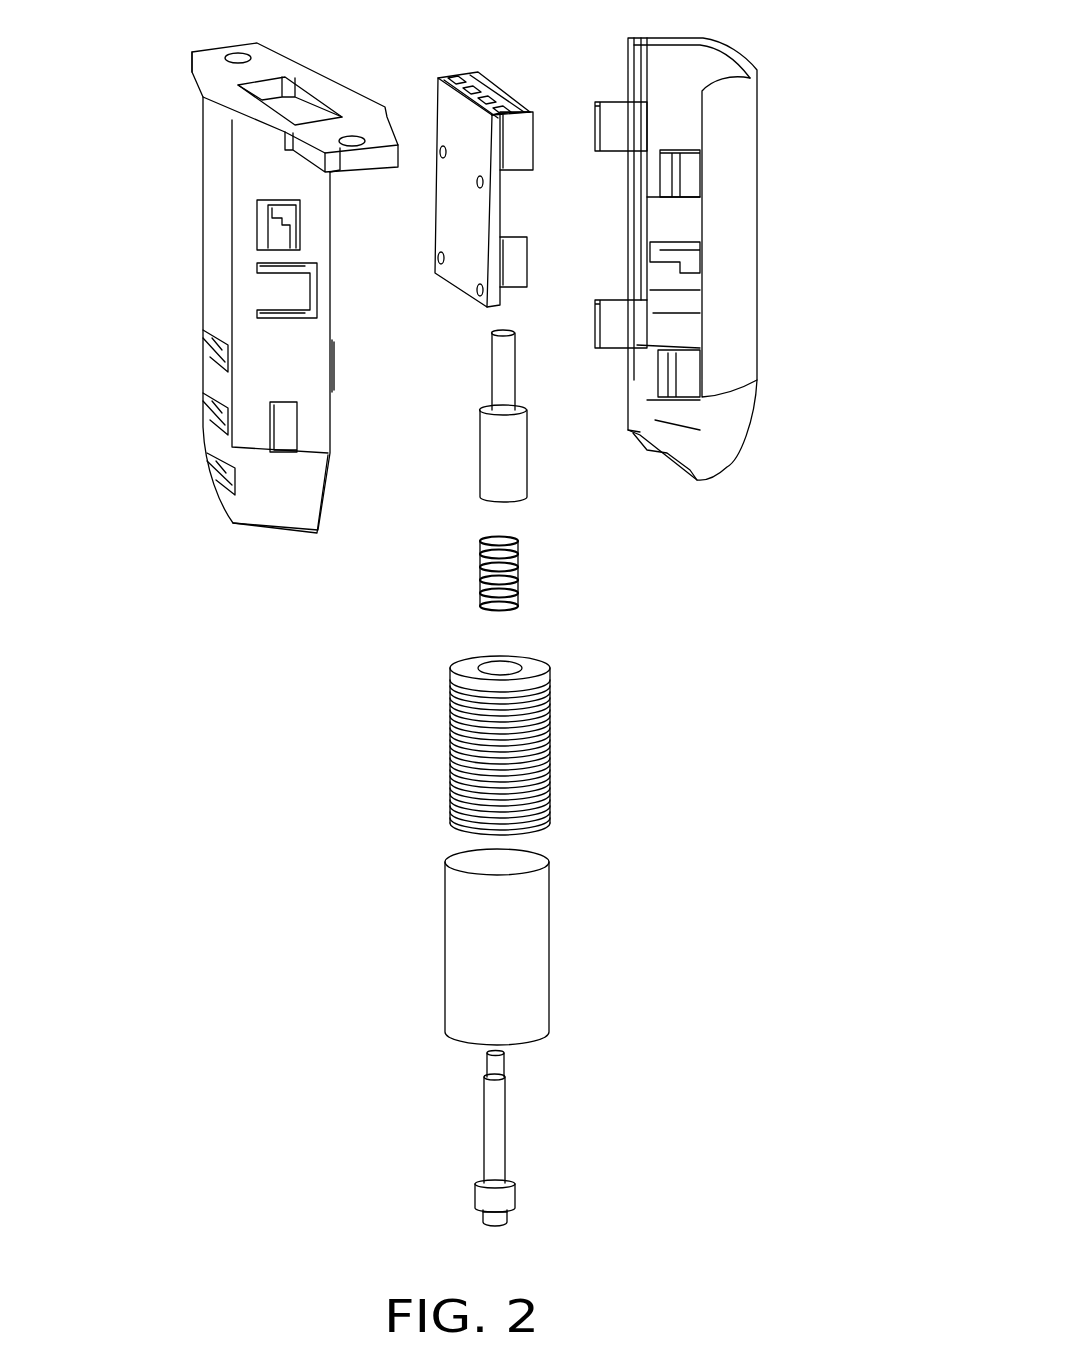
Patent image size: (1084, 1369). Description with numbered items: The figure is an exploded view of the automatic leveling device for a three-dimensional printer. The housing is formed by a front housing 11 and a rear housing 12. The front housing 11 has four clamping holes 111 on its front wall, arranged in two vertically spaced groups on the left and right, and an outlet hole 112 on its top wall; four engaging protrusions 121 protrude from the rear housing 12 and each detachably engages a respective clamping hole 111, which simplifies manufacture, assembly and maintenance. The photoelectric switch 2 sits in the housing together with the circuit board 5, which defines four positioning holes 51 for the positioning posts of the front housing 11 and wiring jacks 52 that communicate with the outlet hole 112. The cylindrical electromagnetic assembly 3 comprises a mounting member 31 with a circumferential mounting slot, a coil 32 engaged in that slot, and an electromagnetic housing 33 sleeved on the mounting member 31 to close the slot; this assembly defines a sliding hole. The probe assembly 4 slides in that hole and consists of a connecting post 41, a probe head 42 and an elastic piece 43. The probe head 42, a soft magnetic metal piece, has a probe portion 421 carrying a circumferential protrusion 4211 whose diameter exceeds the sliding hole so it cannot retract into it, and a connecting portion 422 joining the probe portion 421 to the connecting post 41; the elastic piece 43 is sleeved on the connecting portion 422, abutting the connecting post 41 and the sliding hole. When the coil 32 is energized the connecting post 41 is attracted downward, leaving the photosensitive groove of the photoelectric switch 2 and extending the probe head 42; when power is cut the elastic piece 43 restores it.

The front housing 11 is at (255, 267).
The clamping holes 111 is at (287, 427).
The outlet hole 112 is at (293, 105).
The rear housing 12 is at (720, 259).
The engaging protrusions 121 is at (690, 162).
The photoelectric switch 2 is at (502, 189).
The circuit board 5 is at (517, 93).
The positioning holes 51 is at (508, 102).
The wiring jacks 52 is at (458, 83).
The electromagnetic assembly 3 is at (428, 850).
The mounting member 31 is at (465, 673).
The coil 32 is at (453, 765).
The electromagnetic housing 33 is at (480, 937).
The probe assembly 4 is at (627, 778).
The connecting post 41 is at (507, 440).
The probe head 42 is at (586, 1010).
The probe portion 421 is at (497, 1213).
The protrusion 4211 is at (473, 1183).
The connecting portion 422 is at (492, 1122).
The elastic piece 43 is at (520, 593).